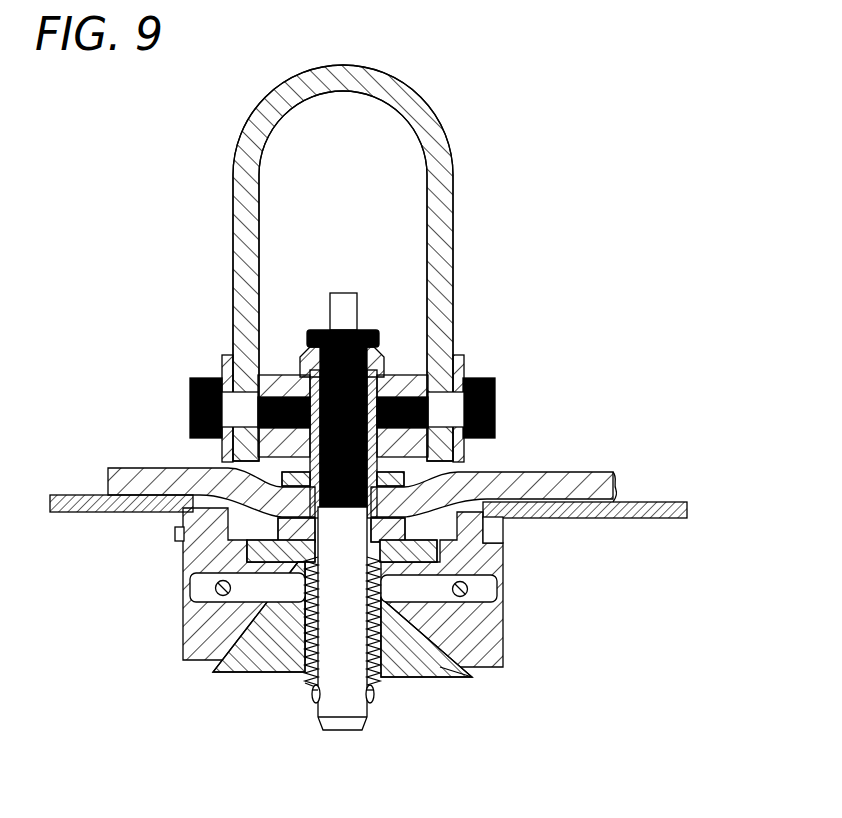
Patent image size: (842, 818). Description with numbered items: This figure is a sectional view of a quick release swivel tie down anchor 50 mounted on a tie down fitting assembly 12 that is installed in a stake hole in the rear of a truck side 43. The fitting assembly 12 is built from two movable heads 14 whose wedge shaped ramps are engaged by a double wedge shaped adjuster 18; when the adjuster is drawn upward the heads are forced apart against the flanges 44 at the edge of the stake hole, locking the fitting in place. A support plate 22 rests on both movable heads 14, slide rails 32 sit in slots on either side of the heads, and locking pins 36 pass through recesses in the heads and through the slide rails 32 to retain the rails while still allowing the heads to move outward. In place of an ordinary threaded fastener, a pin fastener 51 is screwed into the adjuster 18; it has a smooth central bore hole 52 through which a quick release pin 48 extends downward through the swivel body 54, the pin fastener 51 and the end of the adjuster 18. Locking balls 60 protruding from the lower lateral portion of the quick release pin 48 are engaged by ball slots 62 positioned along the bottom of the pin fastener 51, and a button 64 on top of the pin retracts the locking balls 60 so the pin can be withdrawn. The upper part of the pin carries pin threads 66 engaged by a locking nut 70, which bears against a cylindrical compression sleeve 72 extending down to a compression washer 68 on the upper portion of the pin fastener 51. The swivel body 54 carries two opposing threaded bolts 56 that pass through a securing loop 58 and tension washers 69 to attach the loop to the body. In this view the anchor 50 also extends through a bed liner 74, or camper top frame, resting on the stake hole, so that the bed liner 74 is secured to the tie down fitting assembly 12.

The tie down fitting assembly 12 is at (681, 657).
The movable heads 14 is at (183, 645).
The double wedge shaped adjuster 18 is at (455, 679).
The support plate 22 is at (462, 563).
The slide rails 32 is at (500, 632).
The locking pins 36 is at (200, 585).
The truck side 43 is at (665, 502).
The flanges 44 is at (503, 523).
The quick release pin 48 is at (345, 730).
The swivel tie down anchor 50 is at (560, 199).
The pin fastener 51 is at (307, 683).
The smooth central bore hole 52 is at (305, 678).
The swivel body 54 is at (233, 312).
The threaded bolts 56 is at (192, 402).
The securing loop 58 is at (442, 124).
The locking balls 60 is at (313, 698).
The ball slots 62 is at (313, 692).
The button 64 is at (345, 295).
The pin threads 66 is at (236, 318).
The compression washer 68 is at (290, 488).
The tension washers 69 is at (222, 368).
The locking nut 70 is at (303, 350).
The cylindrical compression sleeve 72 is at (405, 352).
The bed liner 74 is at (545, 470).